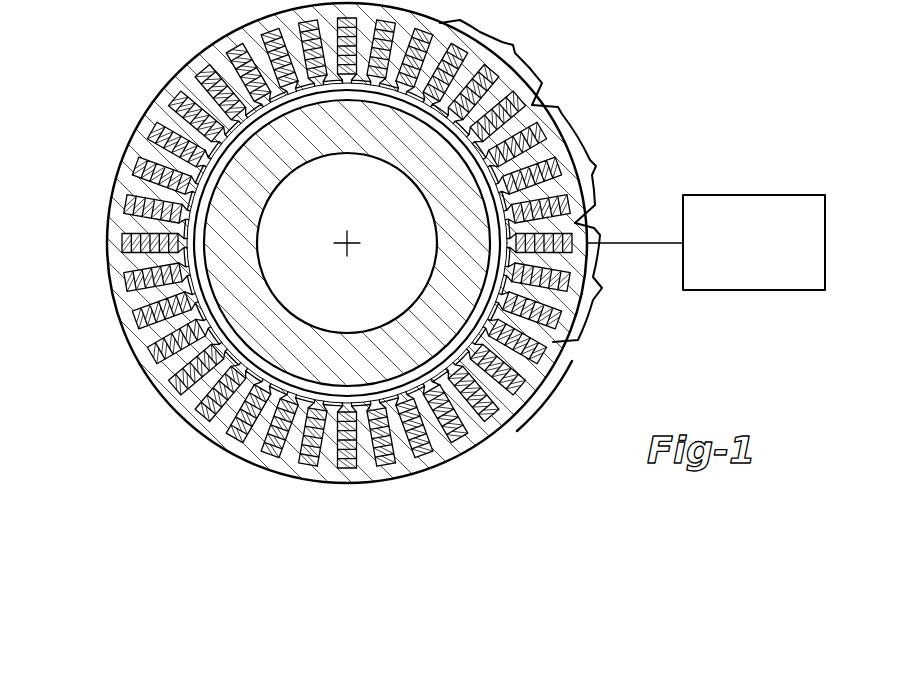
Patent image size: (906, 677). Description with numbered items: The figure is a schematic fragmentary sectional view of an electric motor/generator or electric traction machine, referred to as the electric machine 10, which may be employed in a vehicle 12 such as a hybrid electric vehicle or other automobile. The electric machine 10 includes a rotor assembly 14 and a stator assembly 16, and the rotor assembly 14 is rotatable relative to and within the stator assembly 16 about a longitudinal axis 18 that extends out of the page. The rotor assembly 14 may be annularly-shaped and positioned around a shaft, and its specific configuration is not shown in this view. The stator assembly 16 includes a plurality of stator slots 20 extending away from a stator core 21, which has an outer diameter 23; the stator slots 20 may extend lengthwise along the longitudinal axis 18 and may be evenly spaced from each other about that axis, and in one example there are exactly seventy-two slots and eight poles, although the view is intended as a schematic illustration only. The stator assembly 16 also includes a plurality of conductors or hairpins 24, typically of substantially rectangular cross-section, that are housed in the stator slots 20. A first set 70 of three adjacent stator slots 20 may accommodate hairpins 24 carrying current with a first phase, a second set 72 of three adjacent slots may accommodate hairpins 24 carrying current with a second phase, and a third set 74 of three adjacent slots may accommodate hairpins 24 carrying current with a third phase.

The electric machine 10 is at (139, 64).
The vehicle 12 is at (756, 195).
The rotor assembly 14 is at (207, 231).
The stator assembly 16 is at (108, 173).
The longitudinal axis 18 is at (347, 243).
The stator slots 20 is at (130, 320).
The stator core 21 is at (537, 377).
The outer diameter 23 is at (210, 47).
The hairpins 24 is at (233, 435).
The first set 70 is at (491, 60).
The second set 72 is at (573, 164).
The third set 74 is at (591, 282).